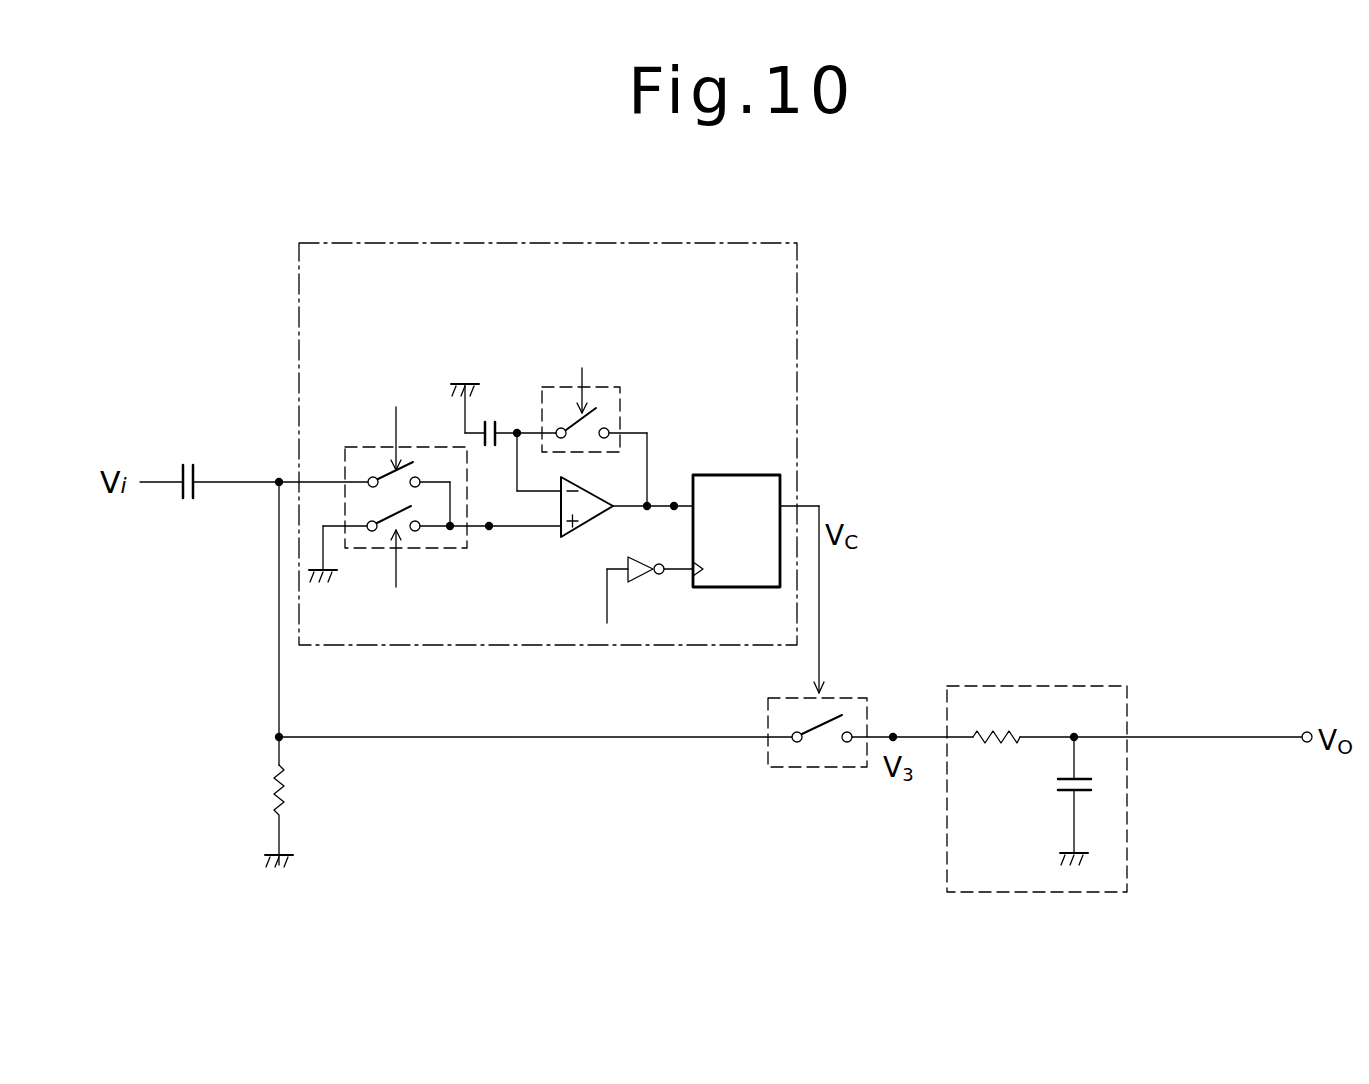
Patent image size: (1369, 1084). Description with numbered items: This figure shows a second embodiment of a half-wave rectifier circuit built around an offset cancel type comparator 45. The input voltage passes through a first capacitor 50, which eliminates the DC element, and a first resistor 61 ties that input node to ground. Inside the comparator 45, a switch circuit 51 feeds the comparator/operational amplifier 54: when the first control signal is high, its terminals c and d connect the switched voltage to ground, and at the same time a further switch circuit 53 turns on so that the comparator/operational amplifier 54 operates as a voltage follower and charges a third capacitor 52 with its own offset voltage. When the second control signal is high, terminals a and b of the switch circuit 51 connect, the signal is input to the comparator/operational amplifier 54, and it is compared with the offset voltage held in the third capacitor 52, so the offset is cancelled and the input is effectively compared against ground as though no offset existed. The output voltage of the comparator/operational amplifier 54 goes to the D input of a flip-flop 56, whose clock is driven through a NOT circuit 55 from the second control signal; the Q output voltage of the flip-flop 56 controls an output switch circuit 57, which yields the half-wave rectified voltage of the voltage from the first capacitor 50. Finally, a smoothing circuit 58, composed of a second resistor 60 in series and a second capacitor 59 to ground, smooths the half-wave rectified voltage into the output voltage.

The offset cancel type comparator 45 is at (298, 299).
The capacitor C1 50 is at (188, 460).
The switch circuit 51 is at (448, 550).
The capacitor C3 52 is at (490, 418).
The switch circuit 53 is at (635, 388).
The comparator/operational amplifier 54 is at (577, 533).
The NOT circuit 55 is at (638, 582).
The flip-flop 56 is at (720, 475).
The switch circuit 57 is at (835, 692).
The smoothing circuit 58 is at (1097, 754).
The capacitor C2 59 is at (1092, 786).
The resistor R2 60 is at (992, 747).
The resistor R1 61 is at (283, 790).